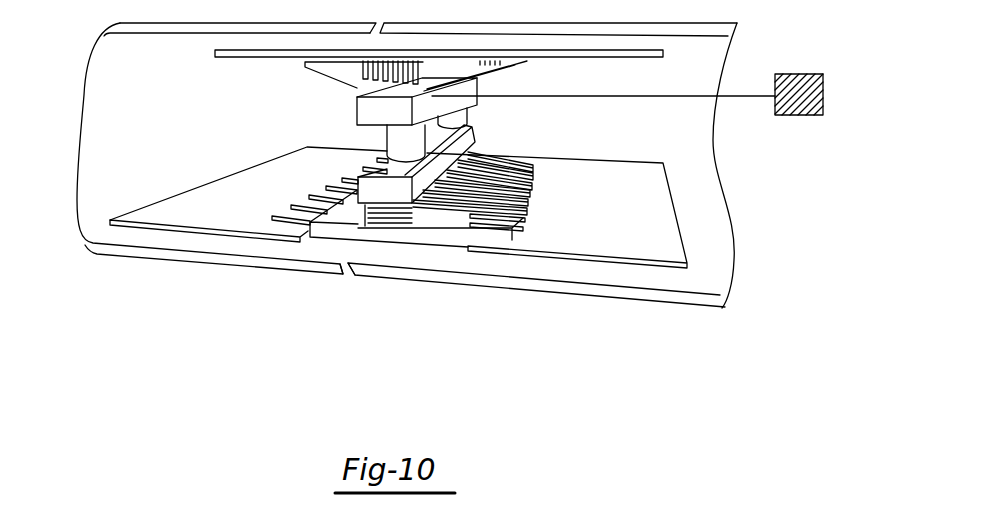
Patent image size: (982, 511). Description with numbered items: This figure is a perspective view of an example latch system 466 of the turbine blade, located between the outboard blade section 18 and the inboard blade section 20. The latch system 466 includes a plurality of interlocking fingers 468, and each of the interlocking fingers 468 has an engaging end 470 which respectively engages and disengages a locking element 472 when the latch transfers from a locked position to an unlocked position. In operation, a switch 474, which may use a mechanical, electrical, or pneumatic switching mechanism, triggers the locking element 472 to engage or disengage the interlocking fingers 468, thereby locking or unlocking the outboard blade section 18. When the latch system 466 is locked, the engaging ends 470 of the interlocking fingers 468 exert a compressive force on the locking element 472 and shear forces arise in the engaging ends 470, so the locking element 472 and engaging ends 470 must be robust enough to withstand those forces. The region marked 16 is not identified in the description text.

The latch system 466 is at (93, 279).
The outboard blade section 18 is at (192, 262).
The inboard blade section 20 is at (578, 297).
The slot 16 is at (348, 296).
The engaging end 470 is at (312, 238).
The interlocking fingers 468 is at (385, 253).
The locking element 472 is at (492, 139).
The switch 474 is at (806, 74).